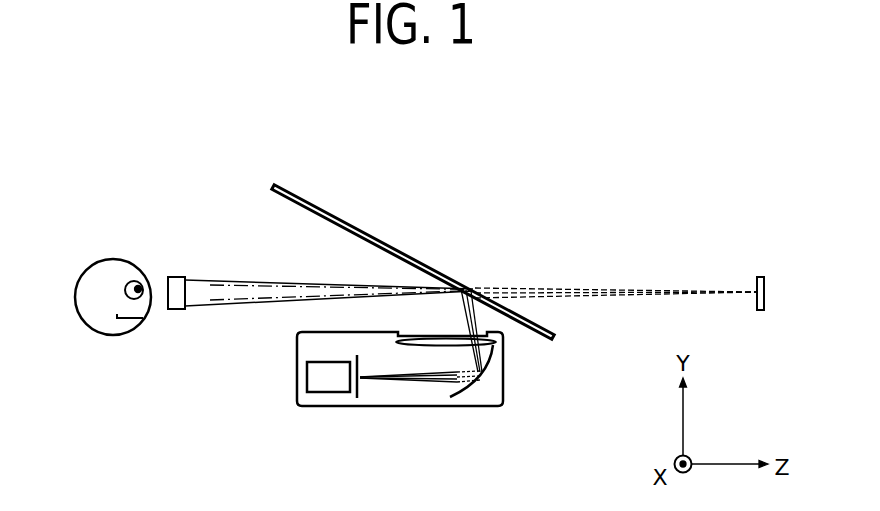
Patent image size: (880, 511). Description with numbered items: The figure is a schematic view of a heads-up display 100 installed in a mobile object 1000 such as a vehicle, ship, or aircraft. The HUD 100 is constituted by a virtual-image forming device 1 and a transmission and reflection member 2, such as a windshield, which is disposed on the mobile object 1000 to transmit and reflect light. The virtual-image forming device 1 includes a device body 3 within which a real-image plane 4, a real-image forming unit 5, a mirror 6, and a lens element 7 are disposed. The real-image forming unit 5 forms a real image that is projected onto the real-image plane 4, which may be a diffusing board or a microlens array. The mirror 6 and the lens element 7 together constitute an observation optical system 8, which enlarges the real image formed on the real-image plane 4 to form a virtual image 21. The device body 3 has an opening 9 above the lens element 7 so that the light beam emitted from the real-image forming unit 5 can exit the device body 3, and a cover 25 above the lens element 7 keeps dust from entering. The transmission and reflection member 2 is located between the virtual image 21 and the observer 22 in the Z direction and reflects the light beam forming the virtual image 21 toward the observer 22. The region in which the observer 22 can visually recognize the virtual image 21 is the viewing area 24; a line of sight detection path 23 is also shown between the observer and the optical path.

The virtual-image forming device 1 is at (499, 444).
The transmission and reflection member 2 is at (348, 222).
The device body 3 is at (297, 358).
The real-image plane 4 is at (358, 388).
The real-image forming unit 5 is at (307, 383).
The mirror 6 is at (487, 367).
The lens element 7 is at (493, 343).
The observation optical system 8 is at (483, 393).
The opening 9 is at (397, 312).
The virtual image 21 is at (767, 293).
The observer 22 is at (73, 302).
The detection light 23 is at (217, 307).
The viewing area 24 is at (179, 277).
The cover 25 is at (415, 333).
The heads-up display 100 is at (516, 267).
The mobile object 1000 is at (623, 154).